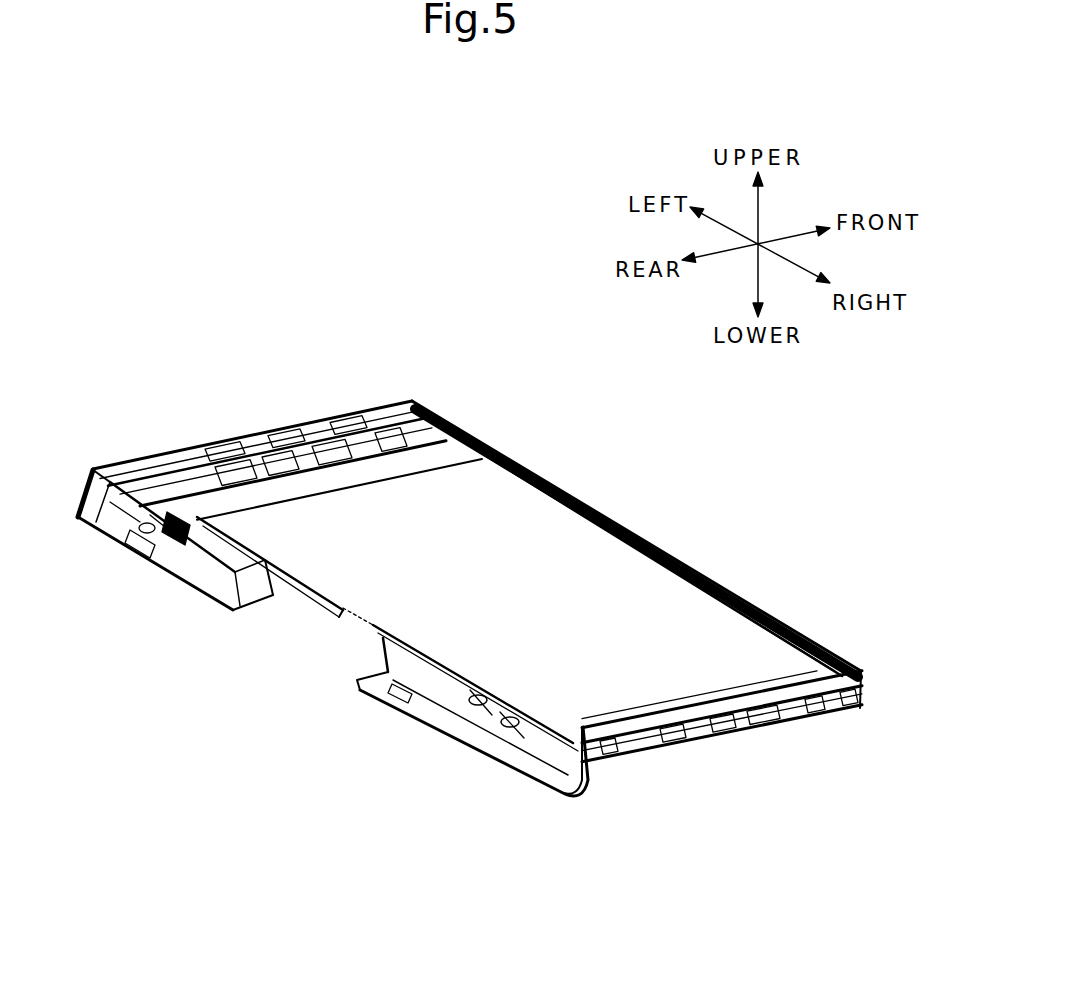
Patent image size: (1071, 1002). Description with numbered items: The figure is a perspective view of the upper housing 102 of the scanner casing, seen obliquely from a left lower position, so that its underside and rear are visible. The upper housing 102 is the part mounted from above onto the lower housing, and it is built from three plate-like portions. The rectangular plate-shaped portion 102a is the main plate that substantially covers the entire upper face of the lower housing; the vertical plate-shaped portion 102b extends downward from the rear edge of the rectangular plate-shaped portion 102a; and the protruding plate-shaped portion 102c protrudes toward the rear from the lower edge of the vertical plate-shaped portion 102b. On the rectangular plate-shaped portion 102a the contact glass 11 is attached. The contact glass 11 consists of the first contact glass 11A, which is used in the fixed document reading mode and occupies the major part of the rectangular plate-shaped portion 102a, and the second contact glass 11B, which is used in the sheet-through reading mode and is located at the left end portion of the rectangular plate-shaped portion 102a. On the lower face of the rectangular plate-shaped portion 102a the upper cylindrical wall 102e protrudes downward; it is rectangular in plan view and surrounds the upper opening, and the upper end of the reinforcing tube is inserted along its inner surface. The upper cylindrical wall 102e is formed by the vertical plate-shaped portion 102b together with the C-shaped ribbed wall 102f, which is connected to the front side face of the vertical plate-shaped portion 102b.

The upper housing 102 is at (457, 620).
The rectangular plate-shaped portion 102a is at (673, 747).
The vertical plate-shaped portion 102b is at (587, 770).
The protruding plate-shaped portion 102c is at (532, 798).
The upper cylindrical wall 102e is at (150, 535).
The C-shaped ribbed wall 102f is at (187, 540).
The contact glass 11 is at (516, 512).
The first contact glass 11A is at (490, 535).
The second contact glass 11B is at (370, 483).